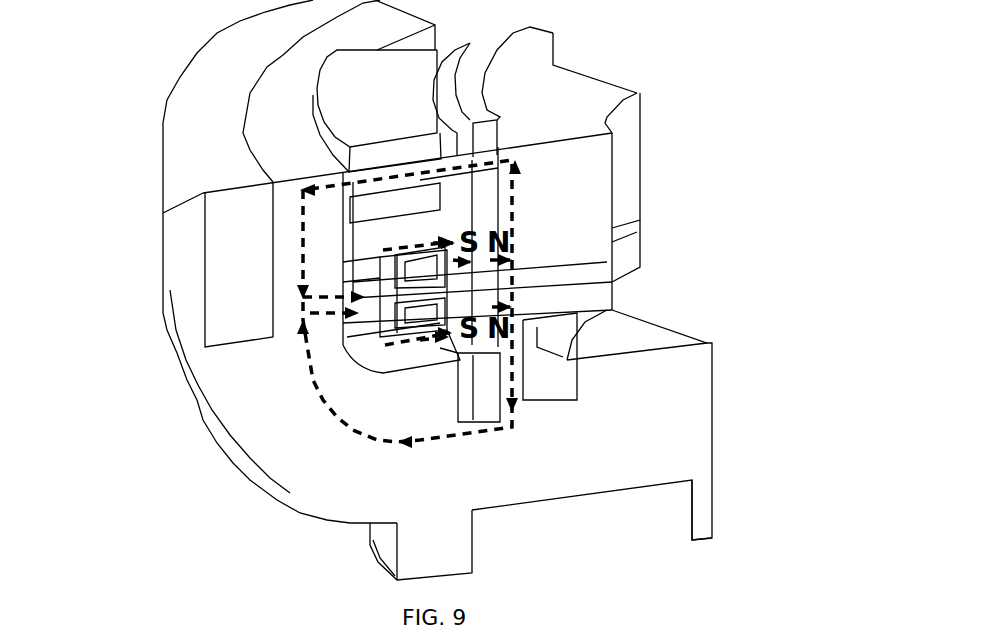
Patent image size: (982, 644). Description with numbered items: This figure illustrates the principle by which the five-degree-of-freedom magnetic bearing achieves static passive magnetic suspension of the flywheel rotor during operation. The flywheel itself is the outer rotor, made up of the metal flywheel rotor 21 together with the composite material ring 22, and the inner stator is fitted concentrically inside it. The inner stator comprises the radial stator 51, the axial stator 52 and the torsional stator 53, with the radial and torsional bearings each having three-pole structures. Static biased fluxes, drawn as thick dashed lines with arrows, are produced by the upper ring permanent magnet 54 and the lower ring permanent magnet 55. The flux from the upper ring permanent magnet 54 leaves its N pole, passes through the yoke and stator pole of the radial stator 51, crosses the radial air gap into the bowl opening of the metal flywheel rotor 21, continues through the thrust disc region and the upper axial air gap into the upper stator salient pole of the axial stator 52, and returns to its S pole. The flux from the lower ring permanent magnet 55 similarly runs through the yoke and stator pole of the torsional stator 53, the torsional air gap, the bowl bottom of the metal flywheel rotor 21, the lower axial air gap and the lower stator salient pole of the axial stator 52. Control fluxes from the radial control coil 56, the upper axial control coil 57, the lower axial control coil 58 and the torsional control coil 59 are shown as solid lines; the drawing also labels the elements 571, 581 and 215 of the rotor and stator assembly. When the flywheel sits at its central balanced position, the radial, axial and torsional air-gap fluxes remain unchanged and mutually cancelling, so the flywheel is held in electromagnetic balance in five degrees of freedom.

The metal flywheel rotor 21 is at (320, 441).
The composite material ring 22 is at (205, 92).
The radial stator 51 is at (560, 172).
The axial stator 52 is at (453, 283).
The torsional stator 53 is at (636, 425).
The upper ring permanent magnet 54 is at (487, 225).
The lower ring permanent magnet 55 is at (487, 341).
The radial control coil 56 is at (370, 91).
The upper axial control coil 57 is at (262, 269).
The first magnet 571 is at (395, 273).
The lower axial control coil 58 is at (268, 357).
The second magnet 581 is at (395, 318).
The torsional control coil 59 is at (530, 387).
The housing foot 215 is at (698, 521).